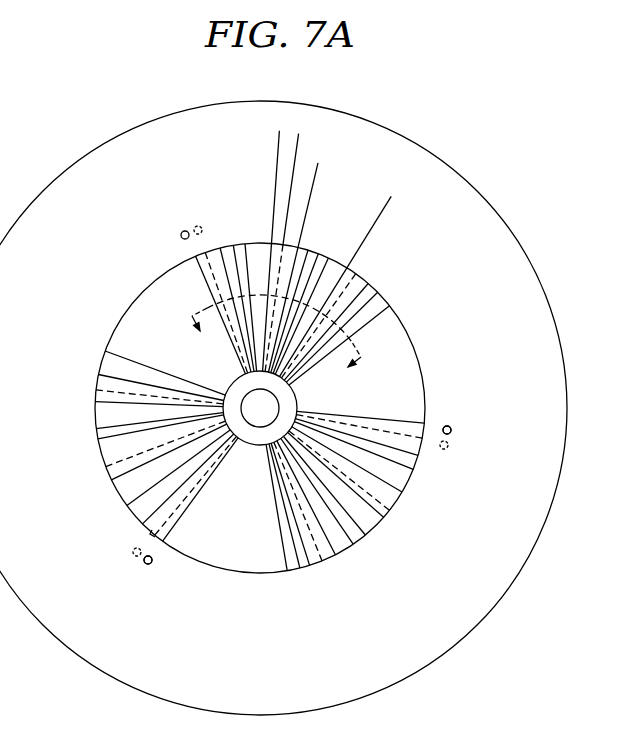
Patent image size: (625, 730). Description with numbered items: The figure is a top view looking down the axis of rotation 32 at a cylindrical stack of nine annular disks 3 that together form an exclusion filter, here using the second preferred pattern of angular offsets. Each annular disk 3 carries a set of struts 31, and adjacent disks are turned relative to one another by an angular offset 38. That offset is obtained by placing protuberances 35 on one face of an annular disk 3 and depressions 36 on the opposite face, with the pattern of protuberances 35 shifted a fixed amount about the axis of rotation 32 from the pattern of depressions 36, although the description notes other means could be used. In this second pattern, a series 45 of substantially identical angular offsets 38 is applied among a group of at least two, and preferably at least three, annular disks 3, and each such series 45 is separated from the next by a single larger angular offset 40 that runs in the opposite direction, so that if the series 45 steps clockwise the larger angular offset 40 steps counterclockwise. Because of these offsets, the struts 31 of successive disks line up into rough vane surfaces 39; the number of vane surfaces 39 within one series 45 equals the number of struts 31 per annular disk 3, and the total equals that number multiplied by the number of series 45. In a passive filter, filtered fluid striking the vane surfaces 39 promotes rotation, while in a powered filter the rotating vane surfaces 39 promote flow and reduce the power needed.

The annular disk 3 is at (530, 259).
The strut 31 is at (102, 449).
The axis of rotation 32 is at (261, 410).
The protuberance 35 is at (181, 235).
The depression 36 is at (205, 227).
The angular offset 38 is at (326, 143).
The larger angular offset 40 is at (390, 197).
The vane surface 39 is at (428, 430).
The series of substantially identical angular offsets 45 is at (428, 430).